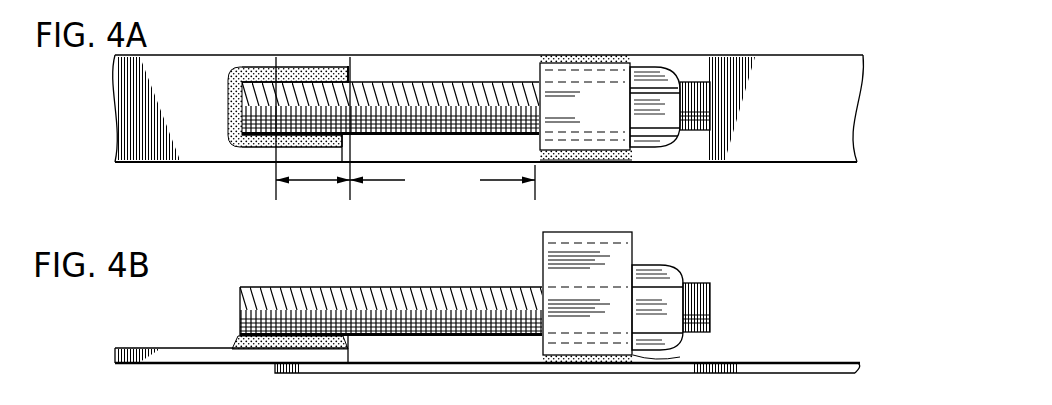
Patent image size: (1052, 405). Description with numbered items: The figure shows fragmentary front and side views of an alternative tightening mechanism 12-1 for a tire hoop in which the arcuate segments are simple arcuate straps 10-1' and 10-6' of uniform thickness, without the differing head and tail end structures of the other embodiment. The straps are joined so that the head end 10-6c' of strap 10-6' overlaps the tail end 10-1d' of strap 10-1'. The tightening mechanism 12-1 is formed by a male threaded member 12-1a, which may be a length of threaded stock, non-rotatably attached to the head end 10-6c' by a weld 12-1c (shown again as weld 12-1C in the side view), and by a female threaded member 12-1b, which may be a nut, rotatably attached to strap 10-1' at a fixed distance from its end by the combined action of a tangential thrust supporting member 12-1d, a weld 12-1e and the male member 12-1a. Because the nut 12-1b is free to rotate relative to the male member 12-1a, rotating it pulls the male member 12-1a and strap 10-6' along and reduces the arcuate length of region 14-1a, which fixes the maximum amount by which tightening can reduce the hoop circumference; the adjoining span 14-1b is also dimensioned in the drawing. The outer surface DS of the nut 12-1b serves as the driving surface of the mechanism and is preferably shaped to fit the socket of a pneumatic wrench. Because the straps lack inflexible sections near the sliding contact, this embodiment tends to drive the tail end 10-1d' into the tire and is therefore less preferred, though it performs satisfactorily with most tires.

In FIG. 4A, the arcuate strap 10-1' is at (489, 89).
In FIG. 4B, the arcuate strap 10-1' is at (577, 341).
In FIG. 4A, the arcuate strap 10-6' is at (277, 81).
In FIG. 4B, the arcuate strap 10-6' is at (459, 338).
In FIG. 4A, the head end 10-6c' is at (380, 49).
In FIG. 4A, the tail end 10-1d' is at (250, 172).
In FIG. 4B, the tightening mechanism 12-1 is at (388, 266).
In FIG. 4A, the male threaded member 12-1a is at (465, 82).
In FIG. 4B, the male threaded member 12-1a is at (452, 287).
In FIG. 4A, the female threaded member 12-1b is at (690, 78).
In FIG. 4B, the female threaded member 12-1b is at (683, 272).
In FIG. 4A, the weld 12-1c is at (311, 67).
In FIG. 4B, the weld 12-1C is at (232, 347).
In FIG. 4A, the tangential thrust supporting member 12-1d is at (572, 69).
In FIG. 4B, the tangential thrust supporting member 12-1d is at (572, 238).
In FIG. 4A, the weld 12-1e is at (616, 162).
In FIG. 4B, the weld 12-1e is at (678, 357).
In FIG. 4A, the driving surface DS is at (665, 75).
In FIG. 4B, the driving surface DS is at (672, 265).
In FIG. 4A, the region 14-1a is at (442, 182).
In FIG. 4A, the embedded length dimension 14-1b is at (308, 182).